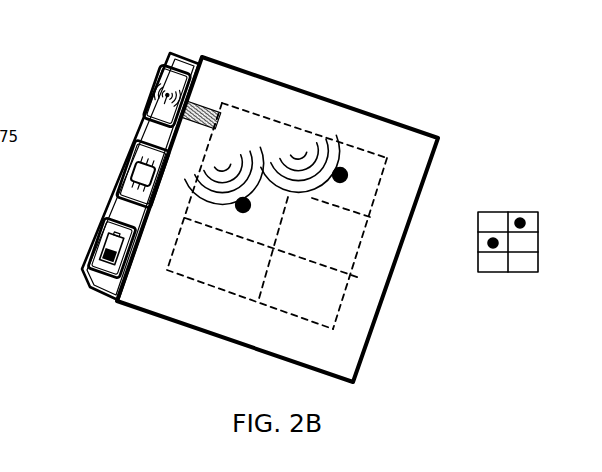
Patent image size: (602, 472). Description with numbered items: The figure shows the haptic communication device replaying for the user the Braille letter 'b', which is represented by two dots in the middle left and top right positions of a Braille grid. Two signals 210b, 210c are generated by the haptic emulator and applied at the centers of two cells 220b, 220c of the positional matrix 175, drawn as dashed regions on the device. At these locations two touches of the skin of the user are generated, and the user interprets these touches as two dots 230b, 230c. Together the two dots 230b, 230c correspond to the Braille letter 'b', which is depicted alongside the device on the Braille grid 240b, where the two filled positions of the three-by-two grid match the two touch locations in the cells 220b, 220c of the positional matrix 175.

The positional matrix 175 is at (323, 282).
The signal 210b is at (250, 138).
The signal 210c is at (330, 138).
The cell 220b is at (210, 215).
The cell 220c is at (342, 203).
The dot 230b is at (243, 213).
The dot 230c is at (356, 177).
The Braille grid 240b is at (508, 273).